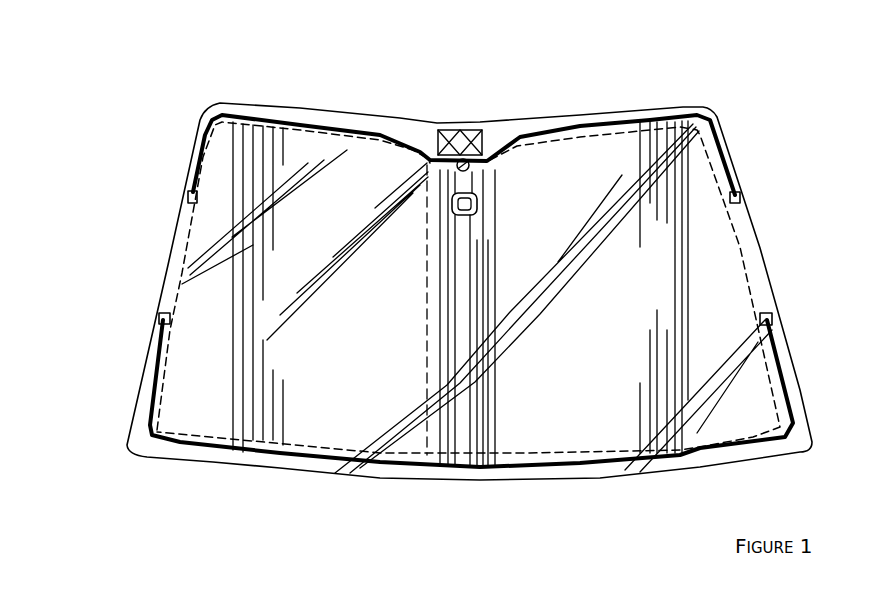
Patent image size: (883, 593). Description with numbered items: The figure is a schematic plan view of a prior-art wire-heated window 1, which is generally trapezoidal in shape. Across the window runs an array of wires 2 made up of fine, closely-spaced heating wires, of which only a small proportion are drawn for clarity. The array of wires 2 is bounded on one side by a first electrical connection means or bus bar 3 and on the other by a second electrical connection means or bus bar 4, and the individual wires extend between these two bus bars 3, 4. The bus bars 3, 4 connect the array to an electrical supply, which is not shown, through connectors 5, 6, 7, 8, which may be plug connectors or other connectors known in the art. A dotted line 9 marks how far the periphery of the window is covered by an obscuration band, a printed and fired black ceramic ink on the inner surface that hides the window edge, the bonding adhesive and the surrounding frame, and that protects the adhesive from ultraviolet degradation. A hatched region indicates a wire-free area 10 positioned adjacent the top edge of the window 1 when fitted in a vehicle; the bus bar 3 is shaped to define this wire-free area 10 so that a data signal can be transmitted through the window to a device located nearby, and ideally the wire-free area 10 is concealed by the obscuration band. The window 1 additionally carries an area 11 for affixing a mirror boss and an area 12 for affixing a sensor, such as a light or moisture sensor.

The wire-heated window 1 is at (412, 51).
The array of wires 2 is at (228, 300).
The first electrical connection means or bus bar 3 is at (655, 118).
The second electrical connection means or bus bar 4 is at (265, 453).
The connector 5 is at (741, 197).
The connector 6 is at (773, 315).
The connector 7 is at (188, 195).
The connector 8 is at (163, 317).
The dotted line 9 is at (742, 258).
The wire-free area 10 is at (462, 128).
The area for affixing a mirror boss 11 is at (440, 158).
The area for affixing a sensor 12 is at (465, 213).